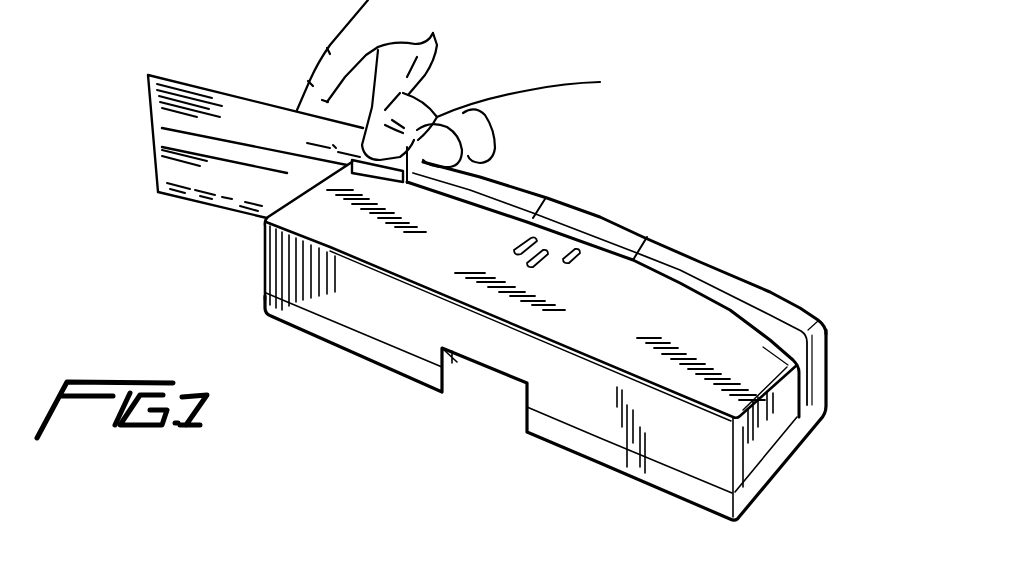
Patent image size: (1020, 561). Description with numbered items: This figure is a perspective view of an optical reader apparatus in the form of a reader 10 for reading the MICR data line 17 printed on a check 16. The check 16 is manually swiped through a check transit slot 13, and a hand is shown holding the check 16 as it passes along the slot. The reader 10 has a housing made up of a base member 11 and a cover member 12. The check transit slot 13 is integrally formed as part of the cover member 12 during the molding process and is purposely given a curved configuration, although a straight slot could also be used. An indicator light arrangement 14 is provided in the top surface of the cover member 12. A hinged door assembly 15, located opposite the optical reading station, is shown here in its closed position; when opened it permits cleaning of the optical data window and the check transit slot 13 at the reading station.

The reader 10 is at (805, 523).
The base member 11 is at (807, 422).
The cover member 12 is at (590, 413).
The check transit slot 13 is at (752, 315).
The indicator light arrangement 14 is at (552, 250).
The hinged door assembly 15 is at (607, 228).
The check 16 is at (245, 97).
The MICR data line 17 is at (190, 198).